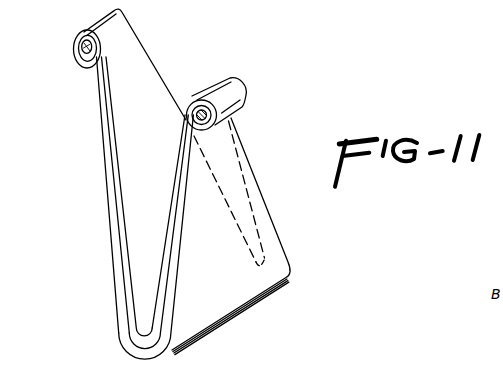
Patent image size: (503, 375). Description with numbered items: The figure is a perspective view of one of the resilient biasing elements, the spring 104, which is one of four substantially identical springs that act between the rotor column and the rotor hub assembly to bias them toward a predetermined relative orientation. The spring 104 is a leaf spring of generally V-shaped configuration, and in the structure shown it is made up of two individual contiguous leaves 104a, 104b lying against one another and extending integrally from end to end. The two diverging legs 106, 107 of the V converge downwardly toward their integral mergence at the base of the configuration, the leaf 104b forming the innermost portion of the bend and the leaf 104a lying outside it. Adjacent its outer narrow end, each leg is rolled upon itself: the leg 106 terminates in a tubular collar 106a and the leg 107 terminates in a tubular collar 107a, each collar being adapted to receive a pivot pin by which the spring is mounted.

The spring 104 is at (131, 228).
The leaf 104a is at (118, 272).
The leaf 104b is at (132, 296).
The leg 106 is at (254, 200).
The tubular collar 106a is at (233, 91).
The leg 107 is at (106, 146).
The tubular collar 107a is at (86, 31).